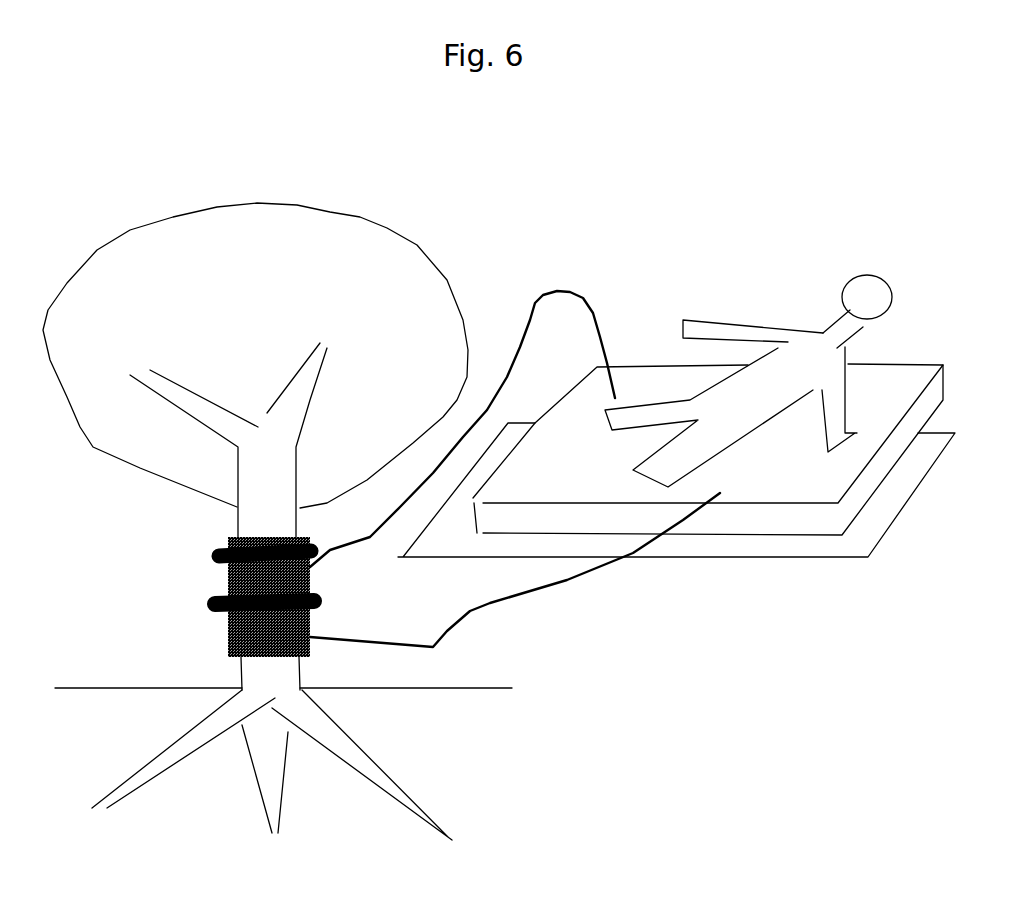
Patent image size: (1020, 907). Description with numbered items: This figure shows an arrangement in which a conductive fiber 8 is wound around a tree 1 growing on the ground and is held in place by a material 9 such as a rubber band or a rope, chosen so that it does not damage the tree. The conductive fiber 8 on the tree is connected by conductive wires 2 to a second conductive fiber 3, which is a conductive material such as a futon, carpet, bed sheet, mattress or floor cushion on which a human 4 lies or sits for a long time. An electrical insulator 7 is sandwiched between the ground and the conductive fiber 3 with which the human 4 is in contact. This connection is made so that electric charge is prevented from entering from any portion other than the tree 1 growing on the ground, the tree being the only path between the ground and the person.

The tree 1 is at (387, 228).
The conductive wires 2 is at (372, 535).
The conductive fiber 3 is at (637, 358).
The human 4 is at (800, 320).
The electrical insulator 7 is at (857, 562).
The conductive fiber 8 is at (227, 640).
The rubber band or rope 9 is at (205, 597).